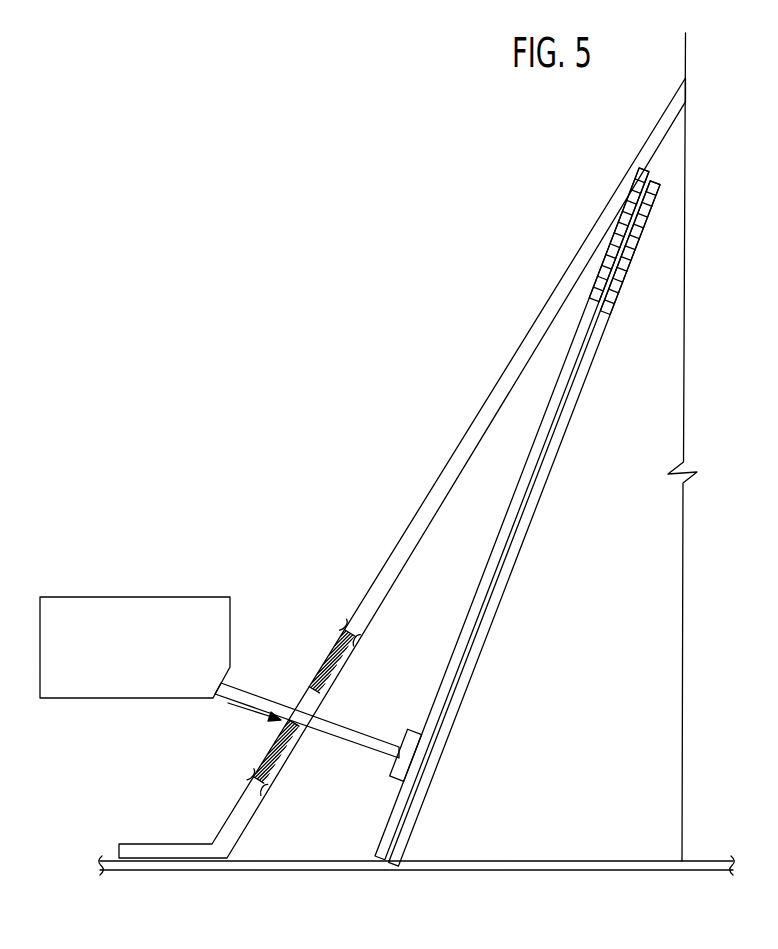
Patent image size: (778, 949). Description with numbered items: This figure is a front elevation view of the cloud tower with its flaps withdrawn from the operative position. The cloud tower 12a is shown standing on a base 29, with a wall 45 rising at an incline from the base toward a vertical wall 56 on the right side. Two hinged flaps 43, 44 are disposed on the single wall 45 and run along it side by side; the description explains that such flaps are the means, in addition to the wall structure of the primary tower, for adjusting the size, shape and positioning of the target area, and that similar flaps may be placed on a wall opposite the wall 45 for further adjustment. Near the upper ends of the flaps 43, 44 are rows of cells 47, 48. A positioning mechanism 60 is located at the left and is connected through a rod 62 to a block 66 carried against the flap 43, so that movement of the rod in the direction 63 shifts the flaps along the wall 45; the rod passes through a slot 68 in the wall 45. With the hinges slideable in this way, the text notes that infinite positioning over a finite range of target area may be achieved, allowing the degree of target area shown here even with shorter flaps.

The support frame 12a is at (402, 468).
The base 29 is at (315, 872).
The flap 43 is at (480, 592).
The flap 44 is at (500, 590).
The wall 45 is at (503, 380).
The first row of cells 47 is at (608, 275).
The second row of cells 48 is at (648, 230).
The wall 56 is at (597, 756).
The positioning mechanism 60 is at (230, 612).
The actuating rod 62 is at (255, 695).
The direction of movement 63 is at (247, 713).
The slider block 66 is at (408, 732).
The slot 68 is at (302, 737).